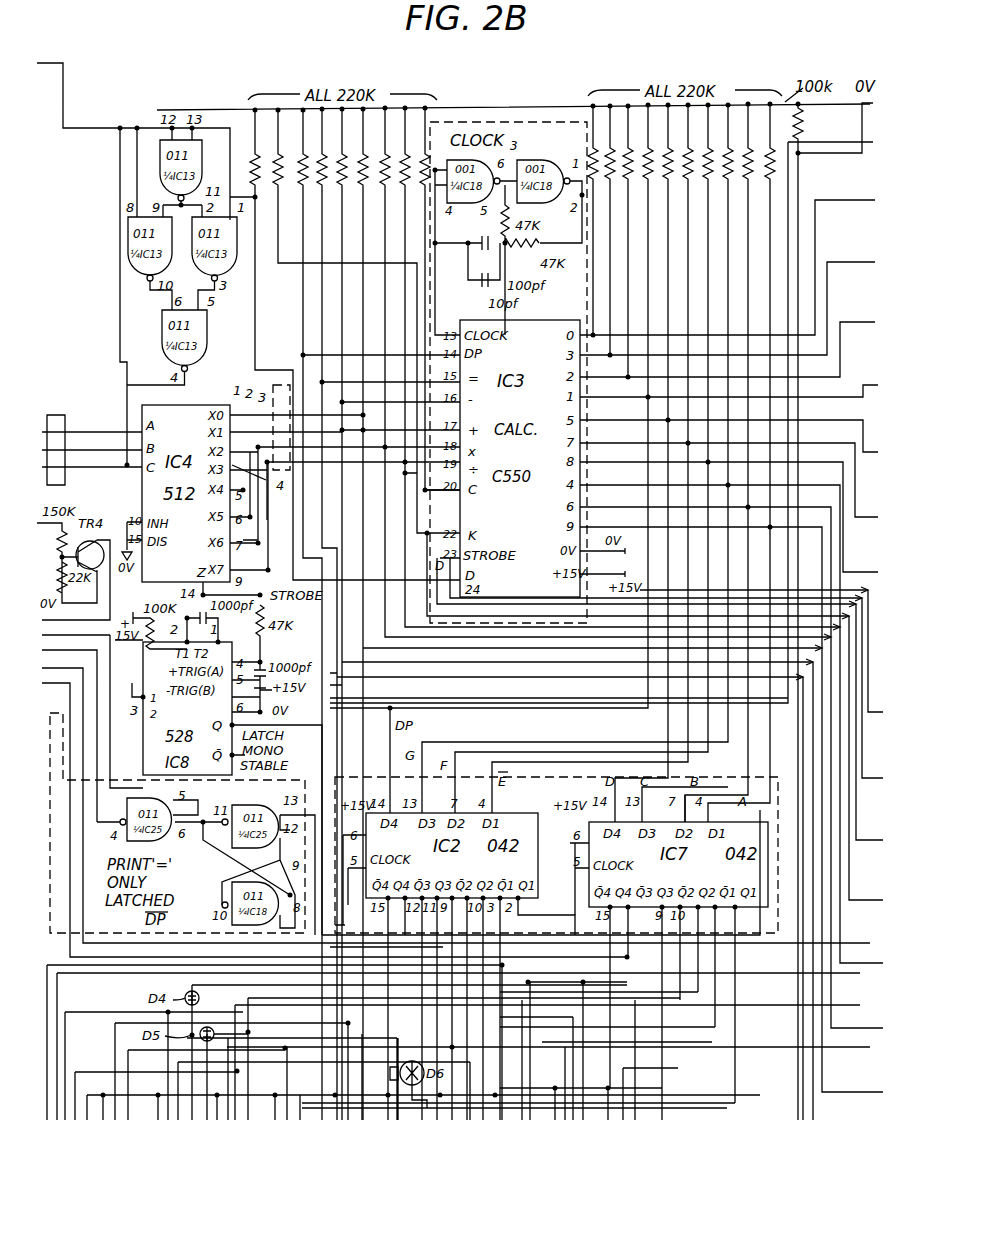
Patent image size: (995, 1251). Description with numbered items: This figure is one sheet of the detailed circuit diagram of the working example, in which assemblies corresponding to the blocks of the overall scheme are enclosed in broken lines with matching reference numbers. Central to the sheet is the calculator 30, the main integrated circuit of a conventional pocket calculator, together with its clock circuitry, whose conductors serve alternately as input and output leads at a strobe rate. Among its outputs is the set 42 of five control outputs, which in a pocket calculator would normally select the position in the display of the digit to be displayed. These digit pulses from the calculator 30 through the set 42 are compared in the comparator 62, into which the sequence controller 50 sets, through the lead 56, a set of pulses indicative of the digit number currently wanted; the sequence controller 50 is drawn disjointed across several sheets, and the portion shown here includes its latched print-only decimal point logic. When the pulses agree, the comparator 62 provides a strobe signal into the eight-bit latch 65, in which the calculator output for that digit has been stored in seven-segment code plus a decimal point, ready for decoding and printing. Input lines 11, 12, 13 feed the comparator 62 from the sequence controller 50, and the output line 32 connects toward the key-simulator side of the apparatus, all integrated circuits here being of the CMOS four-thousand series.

The calculator 30 is at (525, 125).
The set of five control outputs 42 is at (303, 358).
The comparator input lead 56 is at (58, 414).
The comparator 62 is at (183, 425).
The input line A 11 is at (140, 431).
The input line B 12 is at (140, 449).
The input line C 13 is at (140, 468).
The sequence controller 50 is at (112, 780).
The eight-bit latch 65 is at (362, 777).
The key-simulator 32 is at (745, 910).